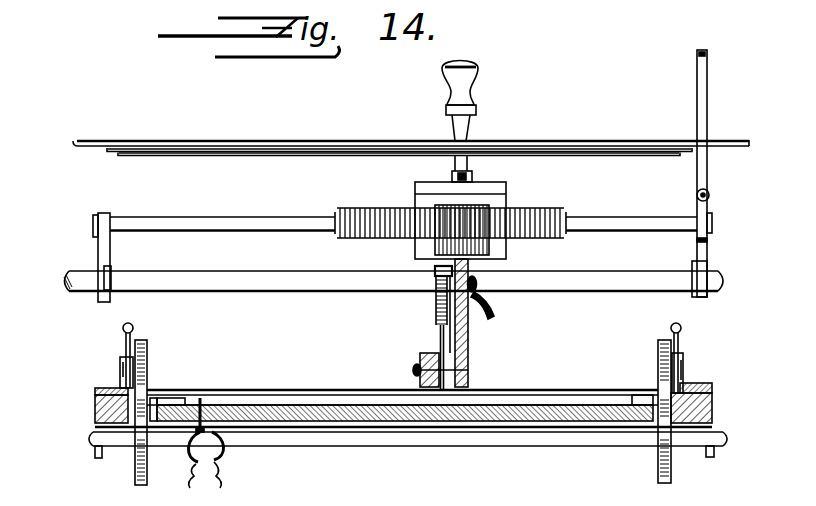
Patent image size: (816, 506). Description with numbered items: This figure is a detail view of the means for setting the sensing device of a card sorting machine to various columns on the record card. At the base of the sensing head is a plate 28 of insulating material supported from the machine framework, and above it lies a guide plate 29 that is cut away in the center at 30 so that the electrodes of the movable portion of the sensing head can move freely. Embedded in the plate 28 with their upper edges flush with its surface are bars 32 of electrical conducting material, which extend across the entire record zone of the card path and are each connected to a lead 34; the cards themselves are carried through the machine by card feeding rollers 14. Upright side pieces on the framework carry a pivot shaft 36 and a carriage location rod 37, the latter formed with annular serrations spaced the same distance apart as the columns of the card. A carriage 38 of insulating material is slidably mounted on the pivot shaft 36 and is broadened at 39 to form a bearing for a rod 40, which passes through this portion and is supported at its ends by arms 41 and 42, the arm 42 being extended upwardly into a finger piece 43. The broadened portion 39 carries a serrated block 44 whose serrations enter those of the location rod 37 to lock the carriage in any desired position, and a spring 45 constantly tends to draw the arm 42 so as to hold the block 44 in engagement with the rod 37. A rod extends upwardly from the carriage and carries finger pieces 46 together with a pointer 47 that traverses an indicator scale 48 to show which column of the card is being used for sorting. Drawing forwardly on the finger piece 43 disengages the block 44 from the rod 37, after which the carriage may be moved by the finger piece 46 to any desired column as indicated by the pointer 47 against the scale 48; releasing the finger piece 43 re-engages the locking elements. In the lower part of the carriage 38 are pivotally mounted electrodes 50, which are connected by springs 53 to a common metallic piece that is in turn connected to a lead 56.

The card feeding rollers 14 is at (135, 470).
The plate 28 is at (372, 420).
The guide plate 29 is at (712, 388).
The cut-away center 30 is at (572, 393).
The bars of electrical conducting material 32 is at (276, 396).
The leads 34 is at (198, 466).
The pivot shaft 36 is at (575, 277).
The carriage location rod 37 is at (549, 210).
The carriage 38 is at (470, 333).
The broadened portion of carriage 39 is at (498, 197).
The rod 40 is at (230, 222).
The arm 41 is at (100, 248).
The arm 42 is at (707, 246).
The finger piece 43 is at (698, 86).
The serrated block 44 is at (490, 250).
The spring 45 is at (697, 193).
The finger pieces 46 is at (465, 80).
The pointer 47 is at (463, 128).
The indicator scale 48 is at (362, 140).
The electrodes 50 is at (435, 342).
The springs 53 is at (435, 306).
The lead 56 is at (490, 315).